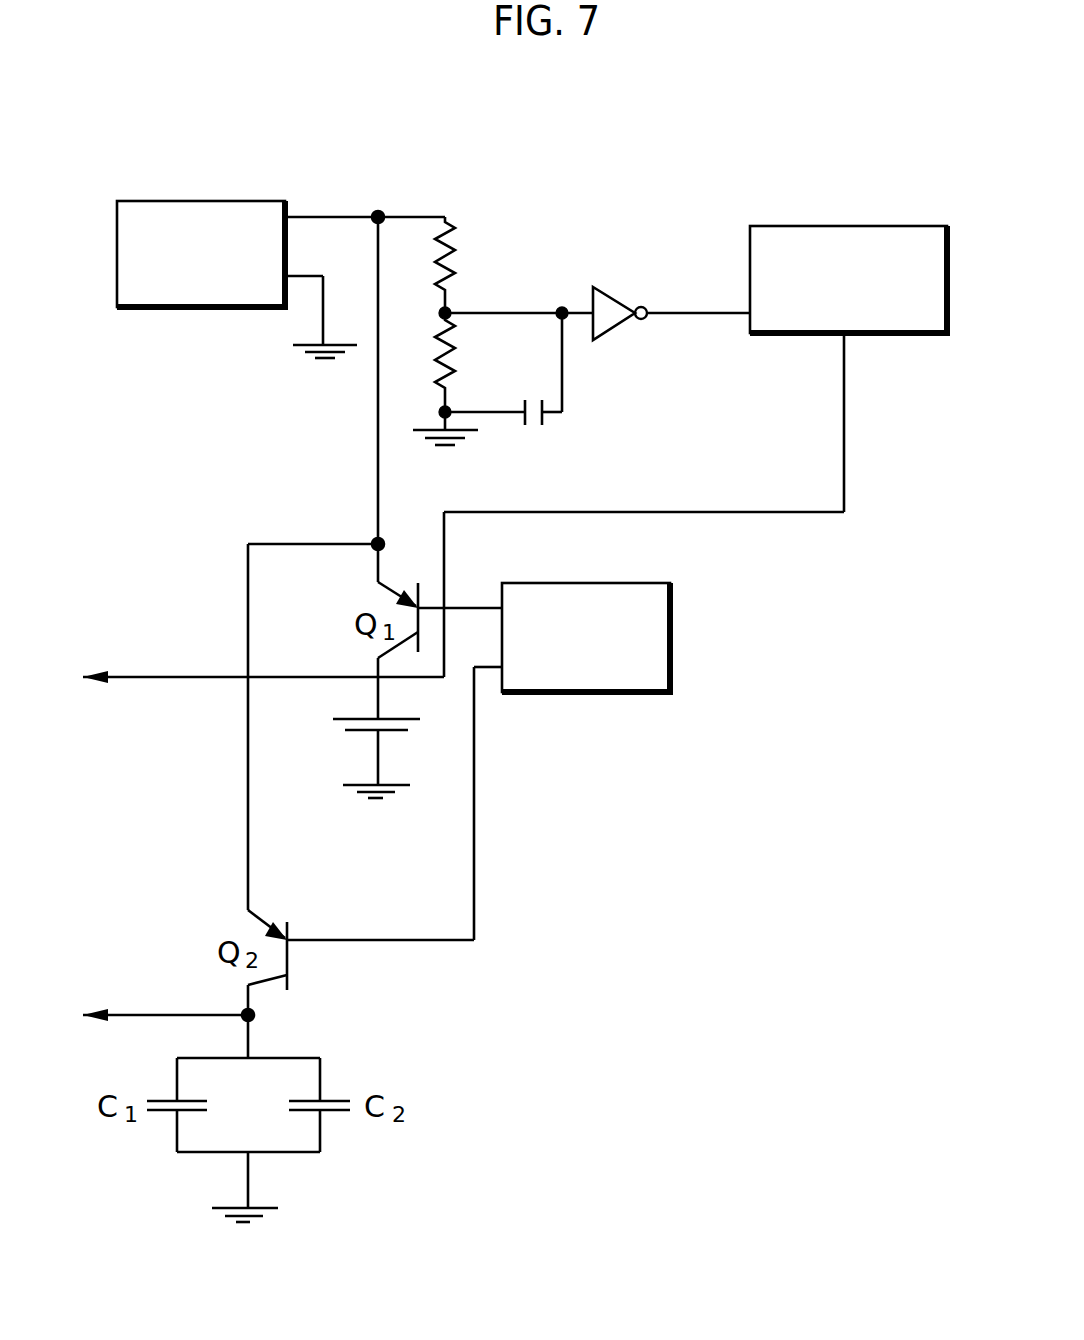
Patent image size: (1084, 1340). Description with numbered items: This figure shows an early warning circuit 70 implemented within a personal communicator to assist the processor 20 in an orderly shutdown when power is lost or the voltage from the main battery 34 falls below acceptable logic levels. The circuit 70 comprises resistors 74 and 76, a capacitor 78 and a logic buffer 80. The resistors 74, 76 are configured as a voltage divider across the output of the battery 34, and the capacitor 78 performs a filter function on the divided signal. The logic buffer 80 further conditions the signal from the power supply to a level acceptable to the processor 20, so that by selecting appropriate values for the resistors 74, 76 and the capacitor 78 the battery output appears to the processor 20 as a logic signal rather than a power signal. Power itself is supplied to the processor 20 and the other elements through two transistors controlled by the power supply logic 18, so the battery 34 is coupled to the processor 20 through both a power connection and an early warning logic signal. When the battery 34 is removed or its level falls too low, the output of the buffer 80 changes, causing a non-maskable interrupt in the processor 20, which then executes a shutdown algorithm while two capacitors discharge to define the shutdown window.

The early warning circuit 70 is at (686, 222).
The main battery 34 is at (140, 201).
The resistor 74 is at (452, 251).
The resistor 76 is at (438, 343).
The capacitor 78 is at (538, 437).
The logic buffer 80 is at (604, 290).
The processor 20 is at (890, 226).
The power supply logic 18 is at (628, 583).